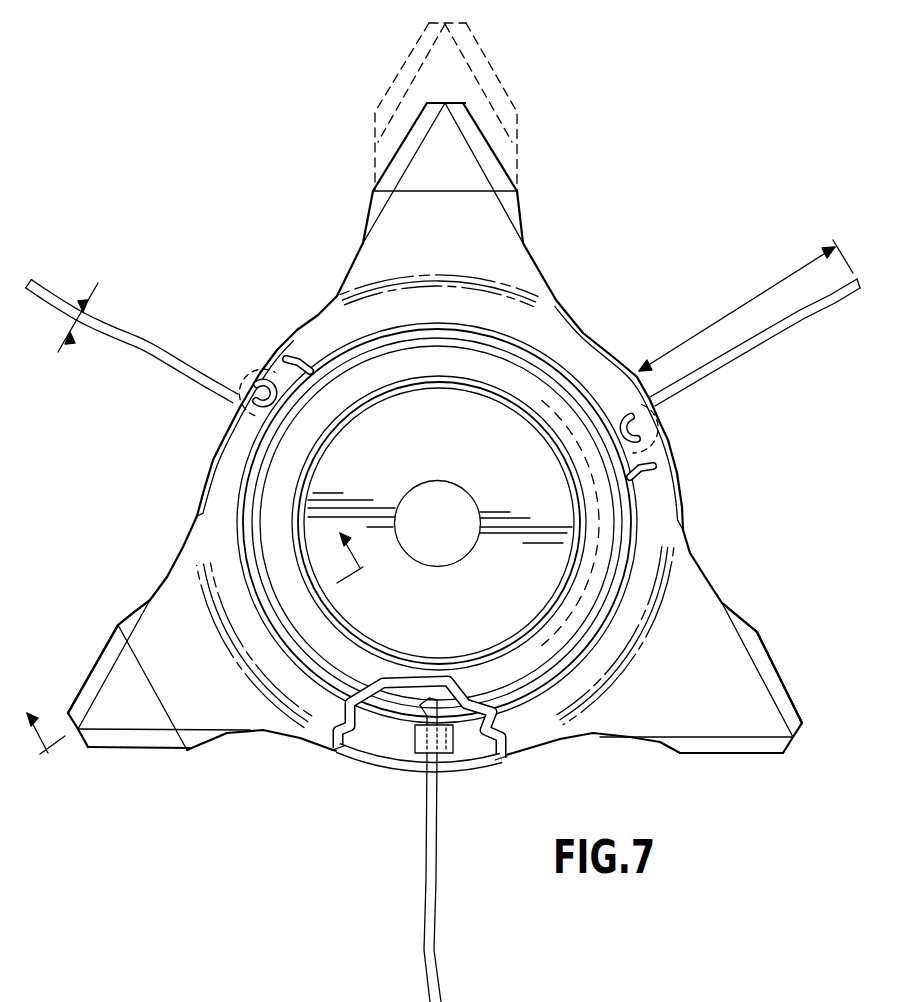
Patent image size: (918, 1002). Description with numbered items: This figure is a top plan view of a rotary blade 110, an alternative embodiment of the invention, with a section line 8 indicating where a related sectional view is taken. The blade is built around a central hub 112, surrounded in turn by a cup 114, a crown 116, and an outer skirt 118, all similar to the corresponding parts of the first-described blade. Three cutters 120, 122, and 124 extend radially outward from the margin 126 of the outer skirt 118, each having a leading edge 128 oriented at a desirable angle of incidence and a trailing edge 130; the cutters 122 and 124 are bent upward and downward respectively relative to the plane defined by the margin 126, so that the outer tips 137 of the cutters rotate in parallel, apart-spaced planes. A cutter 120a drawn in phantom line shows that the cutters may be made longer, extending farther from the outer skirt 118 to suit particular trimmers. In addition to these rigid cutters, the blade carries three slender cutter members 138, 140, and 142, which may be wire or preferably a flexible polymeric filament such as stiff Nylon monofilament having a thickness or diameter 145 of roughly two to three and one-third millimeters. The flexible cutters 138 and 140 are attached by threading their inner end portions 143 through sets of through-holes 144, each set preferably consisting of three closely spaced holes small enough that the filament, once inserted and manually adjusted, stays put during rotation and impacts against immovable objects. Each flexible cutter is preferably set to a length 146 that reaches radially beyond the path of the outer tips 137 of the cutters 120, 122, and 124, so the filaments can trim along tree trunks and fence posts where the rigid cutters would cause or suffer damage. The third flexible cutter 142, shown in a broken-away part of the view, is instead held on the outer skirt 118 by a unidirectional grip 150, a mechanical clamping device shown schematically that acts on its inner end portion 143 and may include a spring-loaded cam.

The section line 8- 8 is at (204, 659).
The rotary blade 110 is at (672, 290).
The hub 112 is at (468, 465).
The cup 114 is at (440, 410).
The crown 116 is at (578, 387).
The outer skirt 118 is at (630, 632).
The cutter 120 is at (760, 703).
The cutter shown in phantom line 120a is at (497, 88).
The cutter 122 is at (468, 165).
The cutter 124 is at (145, 698).
The margin 126 is at (618, 683).
The leading edge 128 is at (770, 660).
The trailing edge 130 is at (100, 662).
The outer tip 137 is at (444, 103).
The flexible cutter 138 is at (770, 335).
The flexible cutter 140 is at (128, 343).
The flexible cutter 142 is at (427, 865).
The inner end portion 143 is at (302, 360).
The through-hole 144 is at (285, 360).
The thickness or diameter 145 is at (92, 287).
The length 146 is at (763, 290).
The unidirectional grip 150 is at (453, 748).